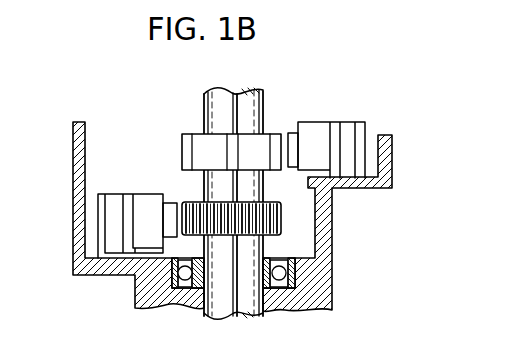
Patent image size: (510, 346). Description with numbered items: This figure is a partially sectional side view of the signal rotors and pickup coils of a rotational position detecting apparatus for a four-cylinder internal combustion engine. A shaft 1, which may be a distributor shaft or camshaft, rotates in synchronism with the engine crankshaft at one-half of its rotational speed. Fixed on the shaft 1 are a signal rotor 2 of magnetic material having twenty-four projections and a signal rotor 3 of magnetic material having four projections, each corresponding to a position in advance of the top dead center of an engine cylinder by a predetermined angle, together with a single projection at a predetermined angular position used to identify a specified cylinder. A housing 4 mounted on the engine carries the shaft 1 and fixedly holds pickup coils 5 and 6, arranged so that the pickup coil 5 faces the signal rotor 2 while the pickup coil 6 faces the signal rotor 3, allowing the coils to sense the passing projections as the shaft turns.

The shaft 1 is at (264, 103).
The signal rotor 2 is at (192, 202).
The signal rotor 3 is at (190, 133).
The housing 4 is at (327, 240).
The pickup coil 5 is at (142, 198).
The pickup coil 6 is at (313, 130).